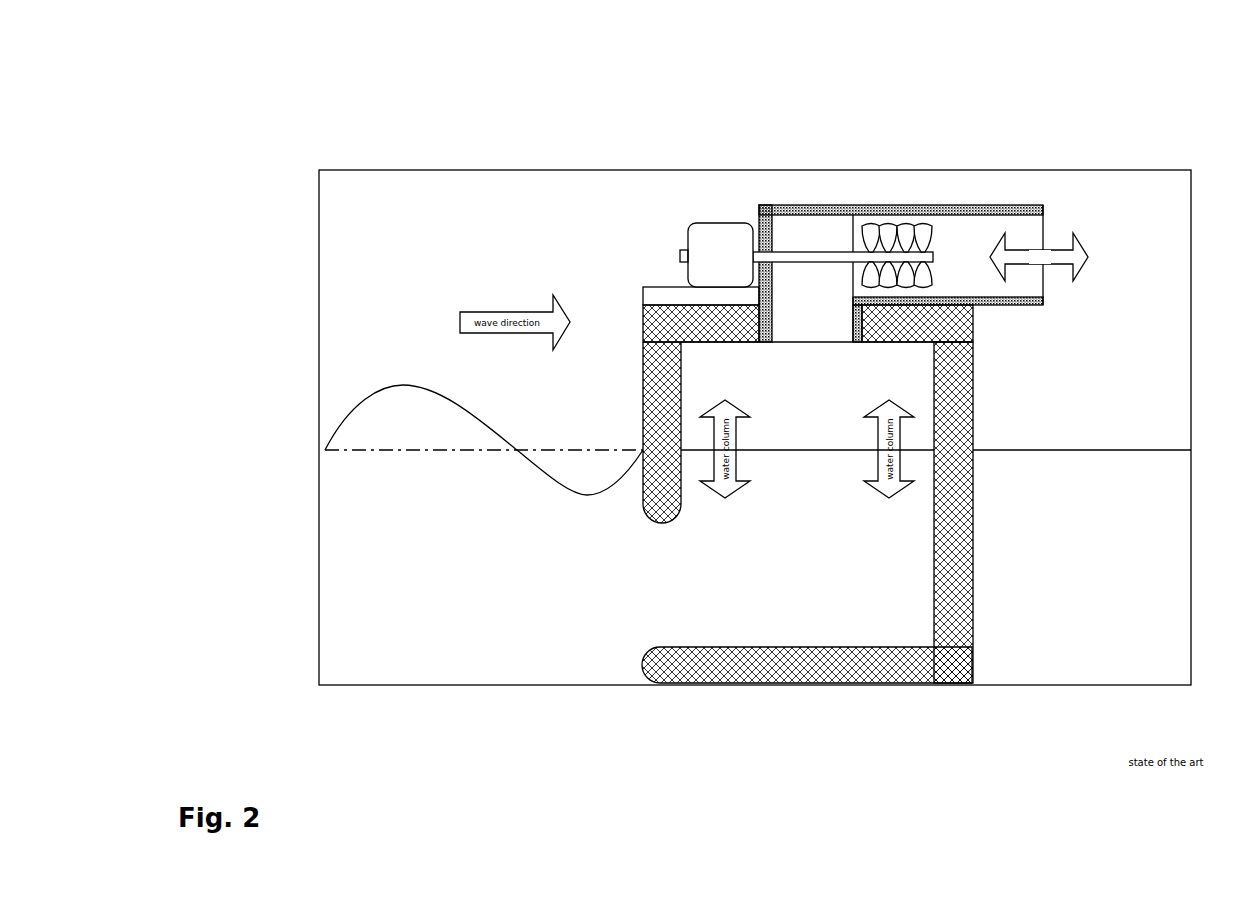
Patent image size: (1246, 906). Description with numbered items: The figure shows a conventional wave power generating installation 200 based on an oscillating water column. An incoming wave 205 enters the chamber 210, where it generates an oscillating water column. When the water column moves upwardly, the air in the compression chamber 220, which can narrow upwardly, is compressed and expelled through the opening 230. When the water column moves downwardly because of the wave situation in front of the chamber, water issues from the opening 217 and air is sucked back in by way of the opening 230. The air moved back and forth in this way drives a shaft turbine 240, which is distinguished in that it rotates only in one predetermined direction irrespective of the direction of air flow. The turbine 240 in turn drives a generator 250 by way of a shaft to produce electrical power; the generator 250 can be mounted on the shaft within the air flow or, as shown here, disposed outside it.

The wave power generating installation 200 is at (940, 86).
The incoming wave 205 is at (397, 383).
The chamber 210 is at (812, 617).
The opening 217 is at (655, 577).
The compression chamber 220 is at (900, 375).
The opening 230 is at (1027, 228).
The shaft turbine 240 is at (903, 230).
The generator 250 is at (715, 240).